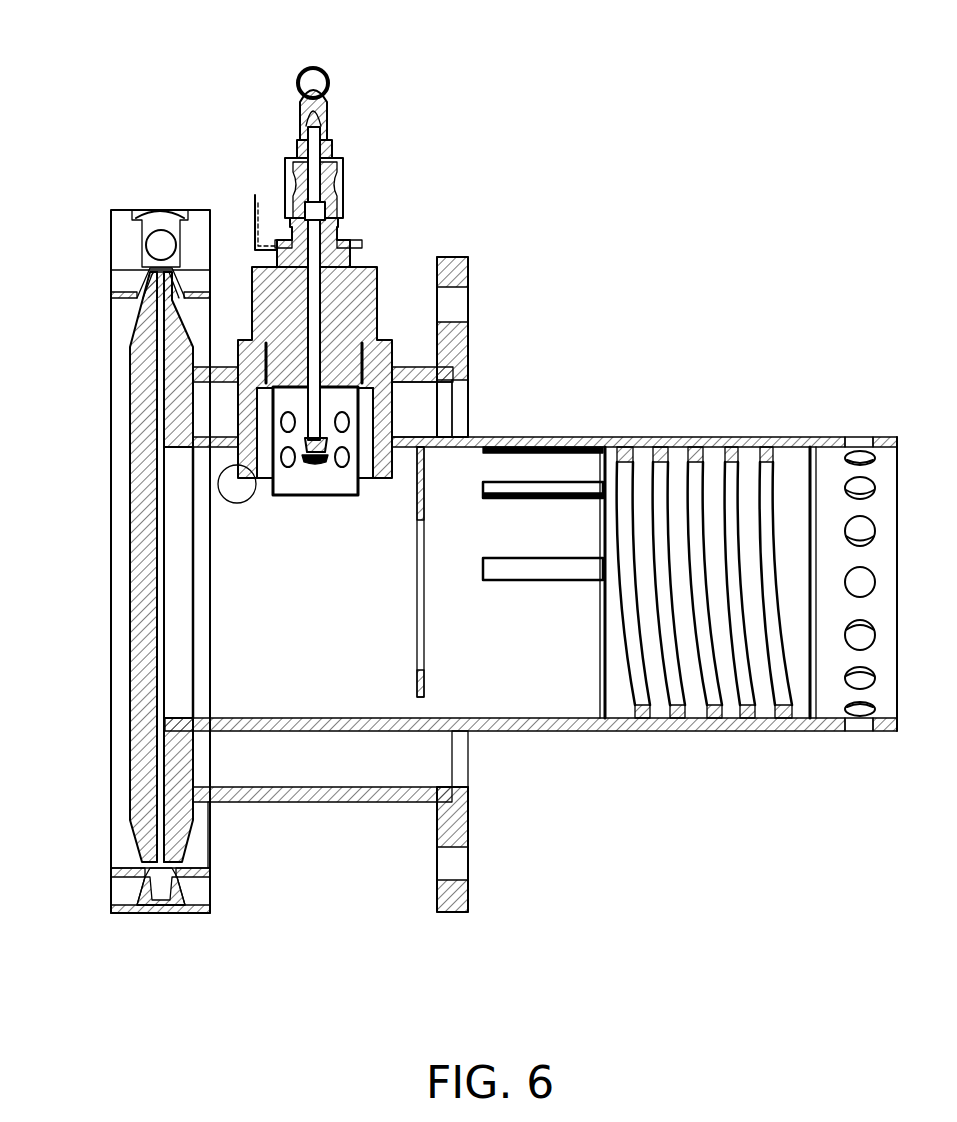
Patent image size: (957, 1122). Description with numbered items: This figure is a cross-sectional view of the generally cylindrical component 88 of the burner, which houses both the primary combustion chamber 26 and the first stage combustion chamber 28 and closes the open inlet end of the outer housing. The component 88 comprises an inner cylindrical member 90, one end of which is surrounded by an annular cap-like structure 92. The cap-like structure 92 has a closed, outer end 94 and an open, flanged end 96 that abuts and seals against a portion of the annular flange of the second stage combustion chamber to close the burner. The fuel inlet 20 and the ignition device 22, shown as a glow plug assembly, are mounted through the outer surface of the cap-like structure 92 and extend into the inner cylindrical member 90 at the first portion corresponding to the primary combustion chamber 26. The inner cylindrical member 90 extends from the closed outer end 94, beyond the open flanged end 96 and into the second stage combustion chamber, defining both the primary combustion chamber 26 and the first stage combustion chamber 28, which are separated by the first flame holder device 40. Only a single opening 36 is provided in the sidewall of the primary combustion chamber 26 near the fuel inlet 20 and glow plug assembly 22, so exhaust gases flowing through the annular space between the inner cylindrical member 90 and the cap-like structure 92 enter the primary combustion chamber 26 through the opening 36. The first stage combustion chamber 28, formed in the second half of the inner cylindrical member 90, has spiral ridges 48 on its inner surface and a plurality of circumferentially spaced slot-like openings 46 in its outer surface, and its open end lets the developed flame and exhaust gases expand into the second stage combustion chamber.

The generally cylindrical component 88 is at (153, 100).
The fuel inlet 20 is at (354, 236).
The ignition device 22 is at (340, 217).
The open, flanged end 96 is at (468, 383).
The inner cylindrical member 90 is at (513, 437).
The slot-like openings 46 is at (583, 483).
The closed, outer end 94 is at (128, 540).
The opening 36 is at (257, 486).
The primary combustion chamber 26 is at (316, 626).
The first stage combustion chamber 28 is at (546, 651).
The first flame holder device 40 is at (424, 678).
The spiral ridges 48 is at (733, 683).
The annular cap-like structure 92 is at (255, 803).